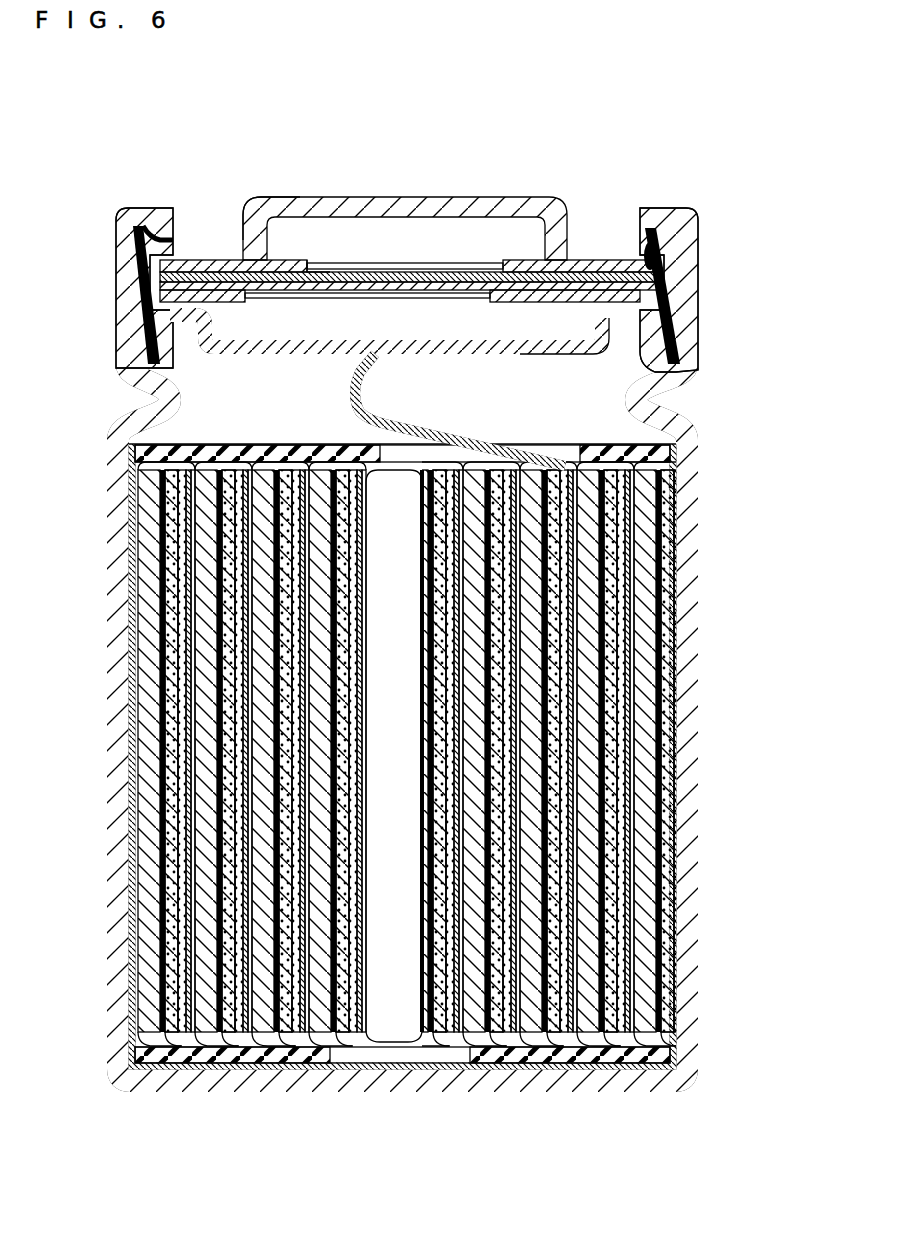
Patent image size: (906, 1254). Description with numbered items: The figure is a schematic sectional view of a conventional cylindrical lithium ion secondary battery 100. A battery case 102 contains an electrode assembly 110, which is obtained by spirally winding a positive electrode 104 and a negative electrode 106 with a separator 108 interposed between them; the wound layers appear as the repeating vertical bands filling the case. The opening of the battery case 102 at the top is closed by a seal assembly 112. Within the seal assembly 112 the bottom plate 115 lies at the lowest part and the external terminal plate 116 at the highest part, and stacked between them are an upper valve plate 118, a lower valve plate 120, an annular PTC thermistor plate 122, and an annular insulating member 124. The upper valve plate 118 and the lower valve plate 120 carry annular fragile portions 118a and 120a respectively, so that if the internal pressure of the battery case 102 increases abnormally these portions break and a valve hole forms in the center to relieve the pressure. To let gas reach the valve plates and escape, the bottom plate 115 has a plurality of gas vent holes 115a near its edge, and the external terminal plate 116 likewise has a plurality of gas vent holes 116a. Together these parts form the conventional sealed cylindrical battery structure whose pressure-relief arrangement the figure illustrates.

The battery 100 is at (662, 126).
The battery case 102 is at (690, 690).
The positive electrode 104 is at (623, 850).
The negative electrode 106 is at (657, 798).
The separator 108 is at (648, 746).
The electrode assembly 110 is at (692, 723).
The seal assembly 112 is at (557, 183).
The bottom plate 115 is at (300, 355).
The gas vent holes 115a is at (567, 356).
The external terminal plate 116 is at (465, 197).
The gas vent holes 116a is at (265, 205).
The upper valve plate 118 is at (660, 266).
The annular fragile portion 118a is at (322, 258).
The lower valve plate 120 is at (658, 300).
The annular fragile portion 120a is at (482, 305).
The annular PTC thermistor plate 122 is at (598, 226).
The annular insulating member 124 is at (200, 218).